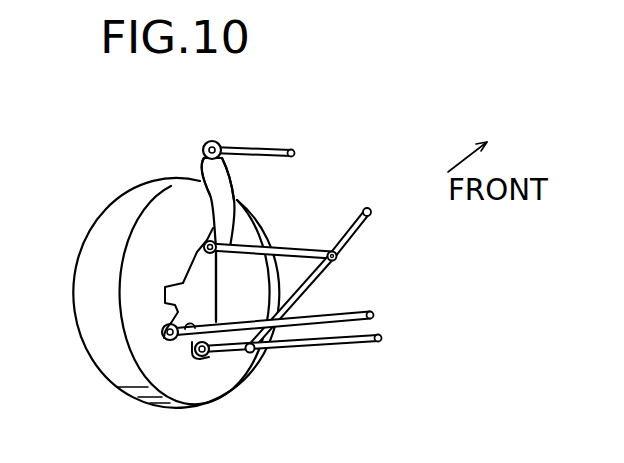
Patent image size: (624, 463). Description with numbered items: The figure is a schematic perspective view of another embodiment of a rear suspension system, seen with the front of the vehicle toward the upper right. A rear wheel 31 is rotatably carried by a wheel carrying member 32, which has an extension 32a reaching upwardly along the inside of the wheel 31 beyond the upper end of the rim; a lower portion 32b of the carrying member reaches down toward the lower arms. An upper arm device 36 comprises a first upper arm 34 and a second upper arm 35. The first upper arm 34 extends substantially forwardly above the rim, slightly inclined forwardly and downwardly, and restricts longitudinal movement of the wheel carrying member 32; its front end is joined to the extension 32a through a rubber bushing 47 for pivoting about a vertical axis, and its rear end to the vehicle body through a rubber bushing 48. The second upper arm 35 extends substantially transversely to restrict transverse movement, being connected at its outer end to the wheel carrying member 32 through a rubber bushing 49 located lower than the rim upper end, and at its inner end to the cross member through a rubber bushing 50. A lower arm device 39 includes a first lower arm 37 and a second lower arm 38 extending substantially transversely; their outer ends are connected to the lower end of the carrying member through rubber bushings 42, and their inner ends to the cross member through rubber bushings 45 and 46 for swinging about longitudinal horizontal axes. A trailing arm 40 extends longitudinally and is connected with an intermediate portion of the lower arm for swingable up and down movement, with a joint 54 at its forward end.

The right rear wheel 31 is at (116, 223).
The wheel carrying member 32 is at (217, 222).
The extension 32a is at (203, 195).
The lower arm portion of knuckle 32b is at (183, 288).
The first upper arm 34 is at (259, 156).
The second upper arm 35 is at (298, 246).
The upper arm device 36 is at (298, 183).
The first lower arm 37 is at (330, 302).
The second lower arm 38 is at (316, 341).
The lower arm device 39 is at (394, 313).
The trailing arm 40 is at (337, 263).
The rubber bushing 42 is at (164, 338).
The rubber bushing 45 is at (375, 319).
The rubber bushing 46 is at (381, 343).
The rubber bushing 47 is at (208, 141).
The rubber bushing 48 is at (292, 149).
The rubber bushing 49 is at (217, 264).
The rubber bushing 50 is at (333, 240).
The joint 54 is at (372, 213).